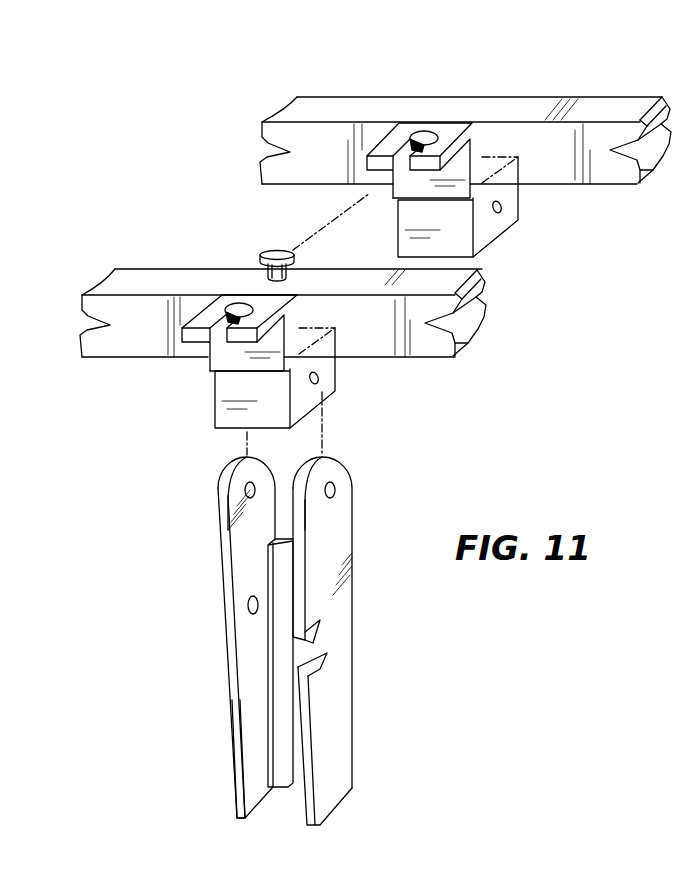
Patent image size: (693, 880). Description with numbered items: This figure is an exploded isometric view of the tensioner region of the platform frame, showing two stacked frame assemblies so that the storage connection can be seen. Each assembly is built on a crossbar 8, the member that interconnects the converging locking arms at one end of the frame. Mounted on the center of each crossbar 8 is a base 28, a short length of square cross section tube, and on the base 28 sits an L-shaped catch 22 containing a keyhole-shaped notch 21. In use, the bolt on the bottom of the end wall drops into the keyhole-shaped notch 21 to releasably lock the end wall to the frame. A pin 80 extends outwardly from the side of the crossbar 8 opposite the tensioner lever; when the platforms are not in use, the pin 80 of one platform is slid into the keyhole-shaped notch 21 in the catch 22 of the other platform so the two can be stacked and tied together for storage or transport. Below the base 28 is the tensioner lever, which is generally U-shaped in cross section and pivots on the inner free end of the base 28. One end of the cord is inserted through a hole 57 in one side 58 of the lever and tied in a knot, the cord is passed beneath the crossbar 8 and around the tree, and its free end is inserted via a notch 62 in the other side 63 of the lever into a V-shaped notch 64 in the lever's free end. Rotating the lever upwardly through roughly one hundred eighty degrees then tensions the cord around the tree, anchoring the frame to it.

The crossbar 8 is at (610, 98).
The keyhole-shaped notch 21 is at (400, 155).
The L-shaped catch 22 is at (306, 234).
The base 28 is at (502, 223).
The pin 80 is at (278, 251).
The hole 57 is at (213, 637).
The side of the lever 58 is at (245, 720).
The notch 62 is at (322, 632).
The other side of the lever 63 is at (356, 641).
The V-shaped notch 64 is at (295, 782).